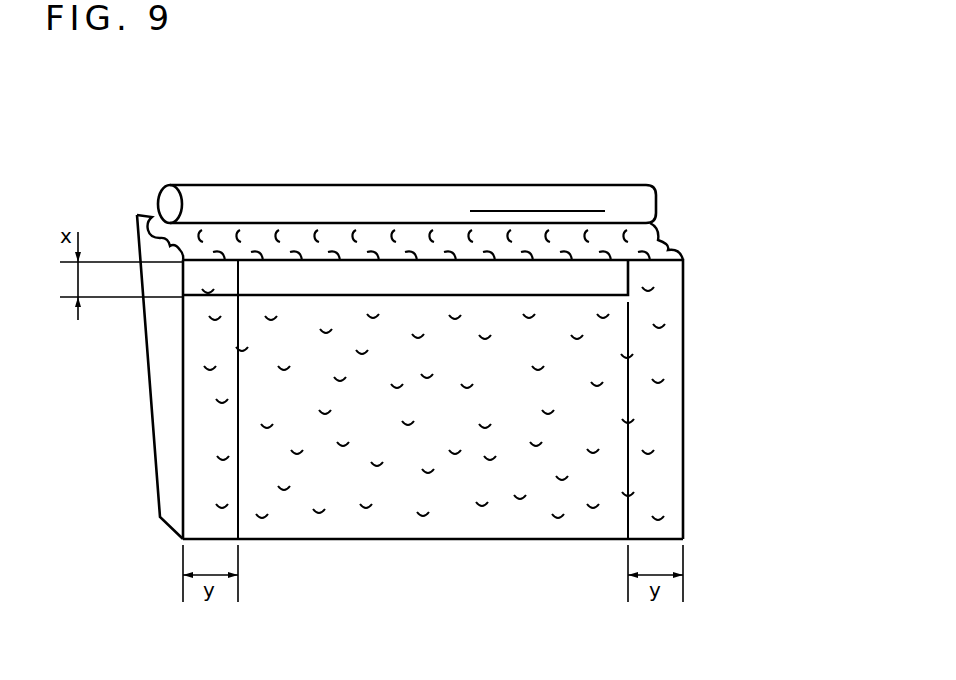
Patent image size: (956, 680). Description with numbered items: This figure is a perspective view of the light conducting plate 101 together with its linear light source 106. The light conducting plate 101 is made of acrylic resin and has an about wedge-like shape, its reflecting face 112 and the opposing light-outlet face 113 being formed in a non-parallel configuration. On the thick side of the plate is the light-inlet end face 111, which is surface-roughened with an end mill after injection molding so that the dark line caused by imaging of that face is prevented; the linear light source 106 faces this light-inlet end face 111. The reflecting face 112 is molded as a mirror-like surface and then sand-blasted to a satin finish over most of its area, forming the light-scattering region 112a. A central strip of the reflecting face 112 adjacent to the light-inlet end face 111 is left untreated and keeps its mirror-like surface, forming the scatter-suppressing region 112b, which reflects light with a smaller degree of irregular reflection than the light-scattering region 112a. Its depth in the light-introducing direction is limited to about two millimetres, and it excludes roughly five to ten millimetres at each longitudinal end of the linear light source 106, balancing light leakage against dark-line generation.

The light conducting plate 101 is at (443, 573).
The linear light source 106 is at (608, 185).
The light-inlet end face 111 is at (663, 240).
The reflecting face 112 is at (807, 270).
The light-scattering region 112a is at (660, 398).
The scatter-suppressing region 112b is at (617, 278).
The light-outlet face 113 is at (155, 438).